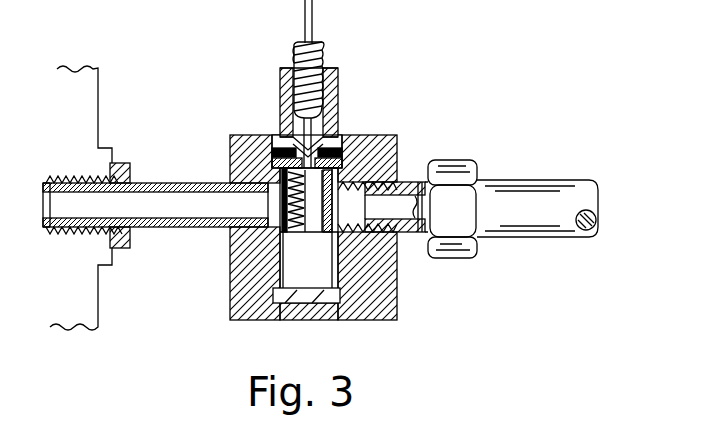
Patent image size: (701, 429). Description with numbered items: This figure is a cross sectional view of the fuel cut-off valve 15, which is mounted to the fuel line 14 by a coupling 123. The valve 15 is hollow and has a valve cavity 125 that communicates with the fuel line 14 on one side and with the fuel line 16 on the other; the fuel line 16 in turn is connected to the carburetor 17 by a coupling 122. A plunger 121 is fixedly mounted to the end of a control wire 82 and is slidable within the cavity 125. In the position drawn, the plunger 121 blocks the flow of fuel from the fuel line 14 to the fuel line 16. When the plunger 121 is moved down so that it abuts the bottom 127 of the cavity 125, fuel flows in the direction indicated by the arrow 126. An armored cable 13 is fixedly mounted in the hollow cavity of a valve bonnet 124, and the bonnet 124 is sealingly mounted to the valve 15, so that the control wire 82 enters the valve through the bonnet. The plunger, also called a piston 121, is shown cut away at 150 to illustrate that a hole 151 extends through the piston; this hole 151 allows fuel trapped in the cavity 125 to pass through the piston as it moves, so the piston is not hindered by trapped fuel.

The armored cable 13 is at (320, 46).
The valve bonnet 124 is at (338, 86).
The control wire 82 is at (320, 130).
The plunger 121 is at (383, 136).
The coupling 123 is at (450, 168).
The fuel line 14 is at (540, 188).
The carburetor 17 is at (98, 98).
The arrow 126 is at (160, 207).
The coupling 122 is at (118, 248).
The fuel line 16 is at (183, 228).
The cut away 150 is at (277, 232).
The hole 151 is at (297, 245).
The valve cavity 125 is at (315, 276).
The bottom of cavity 127 is at (338, 278).
The fuel cut-off valve 15 is at (478, 289).